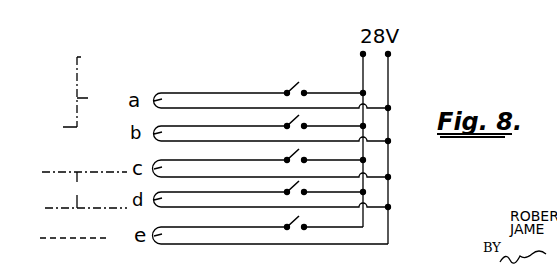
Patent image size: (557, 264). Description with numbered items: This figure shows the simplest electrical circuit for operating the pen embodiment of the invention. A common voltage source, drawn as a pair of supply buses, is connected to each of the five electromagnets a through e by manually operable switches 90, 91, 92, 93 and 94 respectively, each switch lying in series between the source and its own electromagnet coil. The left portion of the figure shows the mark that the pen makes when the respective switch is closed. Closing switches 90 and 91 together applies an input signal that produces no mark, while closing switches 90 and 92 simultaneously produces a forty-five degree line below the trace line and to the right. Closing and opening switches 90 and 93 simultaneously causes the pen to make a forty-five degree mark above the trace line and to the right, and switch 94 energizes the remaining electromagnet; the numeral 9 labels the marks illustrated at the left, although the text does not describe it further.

The relay armature / movable contact 9 is at (78, 72).
The manually operable switch 90 is at (299, 82).
The manually operable switch 91 is at (299, 115).
The manually operable switch 92 is at (299, 149).
The manually operable switch 93 is at (293, 186).
The manually operable switch 94 is at (299, 216).